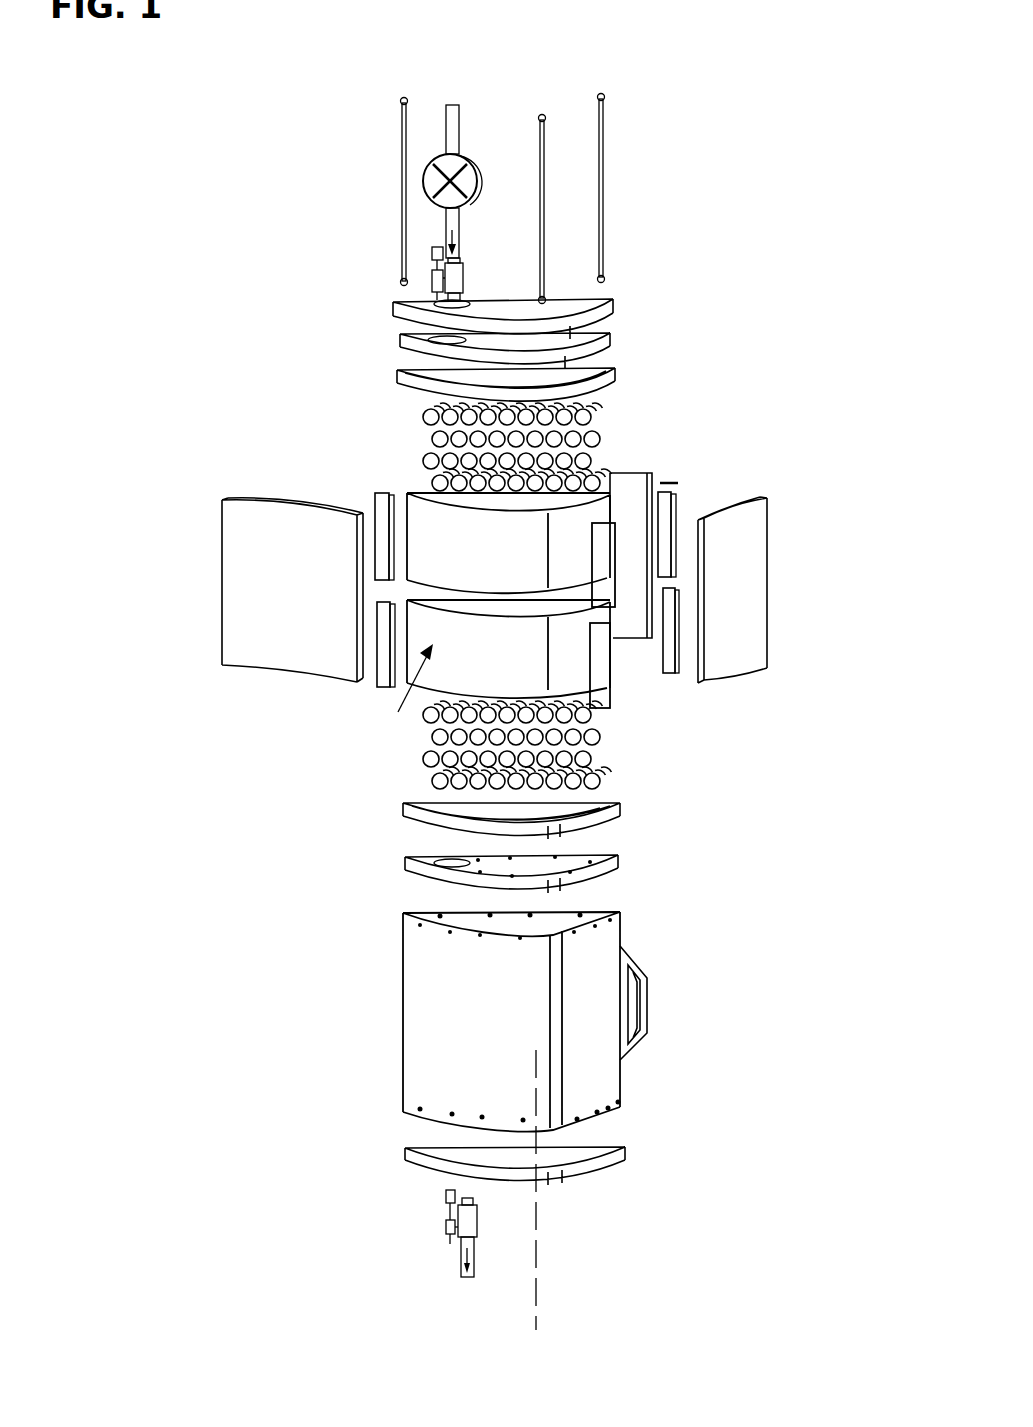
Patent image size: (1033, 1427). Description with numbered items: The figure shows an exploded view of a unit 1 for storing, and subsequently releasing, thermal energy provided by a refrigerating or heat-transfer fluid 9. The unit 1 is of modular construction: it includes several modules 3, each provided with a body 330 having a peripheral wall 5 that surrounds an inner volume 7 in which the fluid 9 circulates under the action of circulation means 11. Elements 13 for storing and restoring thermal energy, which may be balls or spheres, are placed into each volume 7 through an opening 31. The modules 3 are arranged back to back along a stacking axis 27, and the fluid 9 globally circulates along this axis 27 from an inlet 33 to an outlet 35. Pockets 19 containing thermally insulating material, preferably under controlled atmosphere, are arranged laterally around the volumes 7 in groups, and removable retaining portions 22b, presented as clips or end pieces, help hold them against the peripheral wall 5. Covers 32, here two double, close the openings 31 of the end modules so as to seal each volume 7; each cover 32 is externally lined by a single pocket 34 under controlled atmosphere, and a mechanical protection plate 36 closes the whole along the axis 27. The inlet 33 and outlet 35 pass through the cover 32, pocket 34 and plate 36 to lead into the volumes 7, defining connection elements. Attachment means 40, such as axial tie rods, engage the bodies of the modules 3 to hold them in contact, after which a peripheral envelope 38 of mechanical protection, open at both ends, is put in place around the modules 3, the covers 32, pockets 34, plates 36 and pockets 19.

The unit 1 is at (268, 462).
The module 3 is at (406, 504).
The peripheral wall 5 is at (498, 614).
The inner volume 7 is at (618, 483).
The refrigerating or heat-transfer fluid 9 is at (455, 238).
The circulation means 11 is at (479, 171).
The thermal energy storing and restoring elements 13 is at (580, 420).
The thermally insulating elements 19 is at (283, 565).
The removable retaining portion 22b is at (382, 568).
The stacking axis 27 is at (538, 1268).
The opening 31 is at (460, 443).
The cover 32 is at (400, 380).
The inlet 33 is at (450, 276).
The pocket 34 is at (608, 338).
The outlet 35 is at (450, 1228).
The mechanical protection plate 36 is at (613, 302).
The peripheral envelope 38 is at (437, 1025).
The attachment means 40 is at (404, 238).
The body 330 is at (433, 690).